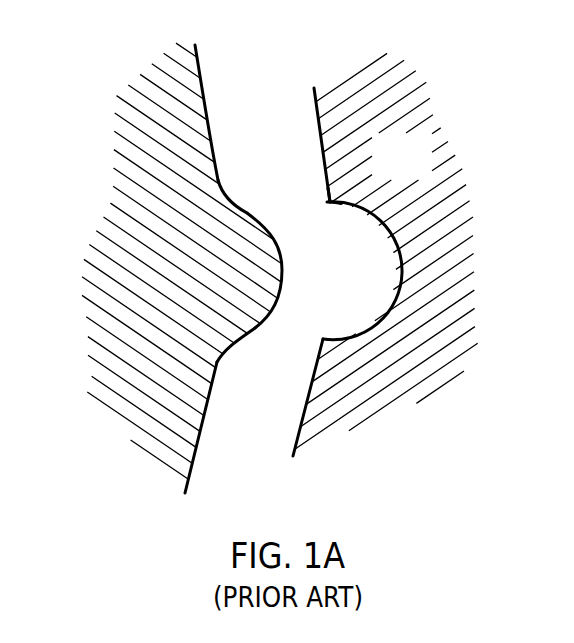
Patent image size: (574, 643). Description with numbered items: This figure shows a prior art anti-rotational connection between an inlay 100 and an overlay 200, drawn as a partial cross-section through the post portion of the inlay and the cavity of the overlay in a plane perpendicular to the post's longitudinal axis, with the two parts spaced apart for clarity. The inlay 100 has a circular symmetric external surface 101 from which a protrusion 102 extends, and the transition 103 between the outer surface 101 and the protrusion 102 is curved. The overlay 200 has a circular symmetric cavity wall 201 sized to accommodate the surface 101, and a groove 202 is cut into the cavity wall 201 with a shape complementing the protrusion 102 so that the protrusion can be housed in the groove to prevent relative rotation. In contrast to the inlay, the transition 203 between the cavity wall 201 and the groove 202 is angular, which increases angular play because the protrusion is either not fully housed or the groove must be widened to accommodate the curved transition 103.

The inlay 100 is at (280, 246).
The circular symmetric external surface 101 is at (214, 268).
The protrusion 102 is at (281, 310).
The transition 103 is at (223, 197).
The overlay 200 is at (362, 254).
The cavity wall 201 is at (314, 110).
The groove 202 is at (393, 270).
The transition 203 is at (325, 204).